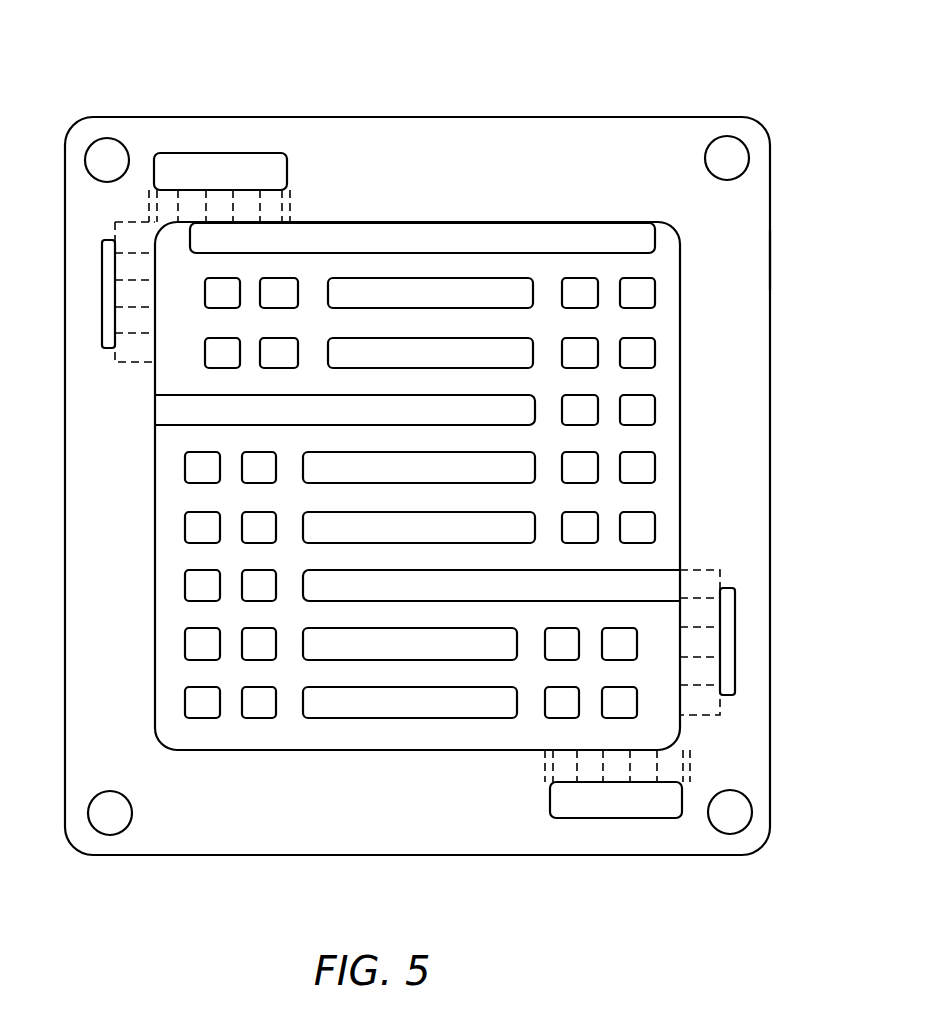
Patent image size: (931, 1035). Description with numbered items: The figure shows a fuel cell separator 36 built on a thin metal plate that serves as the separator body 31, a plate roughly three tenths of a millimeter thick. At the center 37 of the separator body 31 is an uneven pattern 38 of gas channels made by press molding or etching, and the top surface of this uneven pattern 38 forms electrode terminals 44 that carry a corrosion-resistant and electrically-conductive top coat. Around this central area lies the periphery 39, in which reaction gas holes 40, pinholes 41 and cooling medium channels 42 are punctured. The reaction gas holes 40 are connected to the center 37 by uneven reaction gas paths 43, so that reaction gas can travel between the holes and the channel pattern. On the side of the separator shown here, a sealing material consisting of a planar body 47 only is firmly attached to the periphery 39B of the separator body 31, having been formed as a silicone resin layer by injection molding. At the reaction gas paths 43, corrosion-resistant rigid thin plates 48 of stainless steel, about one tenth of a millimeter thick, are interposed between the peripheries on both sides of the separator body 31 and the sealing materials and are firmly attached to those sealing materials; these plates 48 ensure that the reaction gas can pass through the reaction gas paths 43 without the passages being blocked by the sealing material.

The separator body 31 is at (635, 380).
The fuel cell separator 36 is at (275, 95).
The center 37 is at (632, 437).
The uneven pattern of gas channels 38 is at (495, 287).
The periphery 39 is at (148, 117).
The periphery on the other side 39B is at (745, 258).
The reaction gas holes 40 is at (213, 160).
The pinholes 41 is at (727, 145).
The cooling medium channels 42 is at (107, 147).
The reaction gas paths 43 is at (188, 207).
The electrode terminals 44 is at (437, 287).
The planar body 47 is at (612, 135).
The corrosion-resistant rigid thin plates 48 is at (275, 205).